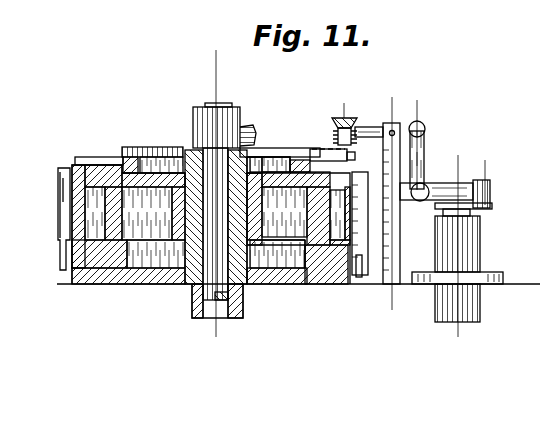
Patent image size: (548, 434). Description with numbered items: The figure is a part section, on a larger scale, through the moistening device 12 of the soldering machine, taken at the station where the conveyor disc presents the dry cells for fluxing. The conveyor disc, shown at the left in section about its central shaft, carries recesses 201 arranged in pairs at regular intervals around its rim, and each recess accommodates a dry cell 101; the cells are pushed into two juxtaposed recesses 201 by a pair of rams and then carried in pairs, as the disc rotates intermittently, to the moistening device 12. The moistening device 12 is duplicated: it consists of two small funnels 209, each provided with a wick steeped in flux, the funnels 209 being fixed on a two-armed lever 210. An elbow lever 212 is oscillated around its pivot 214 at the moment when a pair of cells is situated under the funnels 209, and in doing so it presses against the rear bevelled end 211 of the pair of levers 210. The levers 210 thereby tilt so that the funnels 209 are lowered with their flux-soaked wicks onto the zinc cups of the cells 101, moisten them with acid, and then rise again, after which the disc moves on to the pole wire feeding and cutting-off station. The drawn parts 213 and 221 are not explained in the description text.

The moistening device 12 is at (460, 118).
The dry cell 101 is at (318, 147).
The recess 201 is at (88, 159).
The funnel 209 is at (345, 123).
The two-armed lever 210 is at (373, 137).
The rear bevelled end 211 is at (425, 128).
The elbow lever 212 is at (424, 164).
The support plate 213 is at (445, 210).
The pivot 214 is at (424, 188).
The rod 221 is at (361, 266).